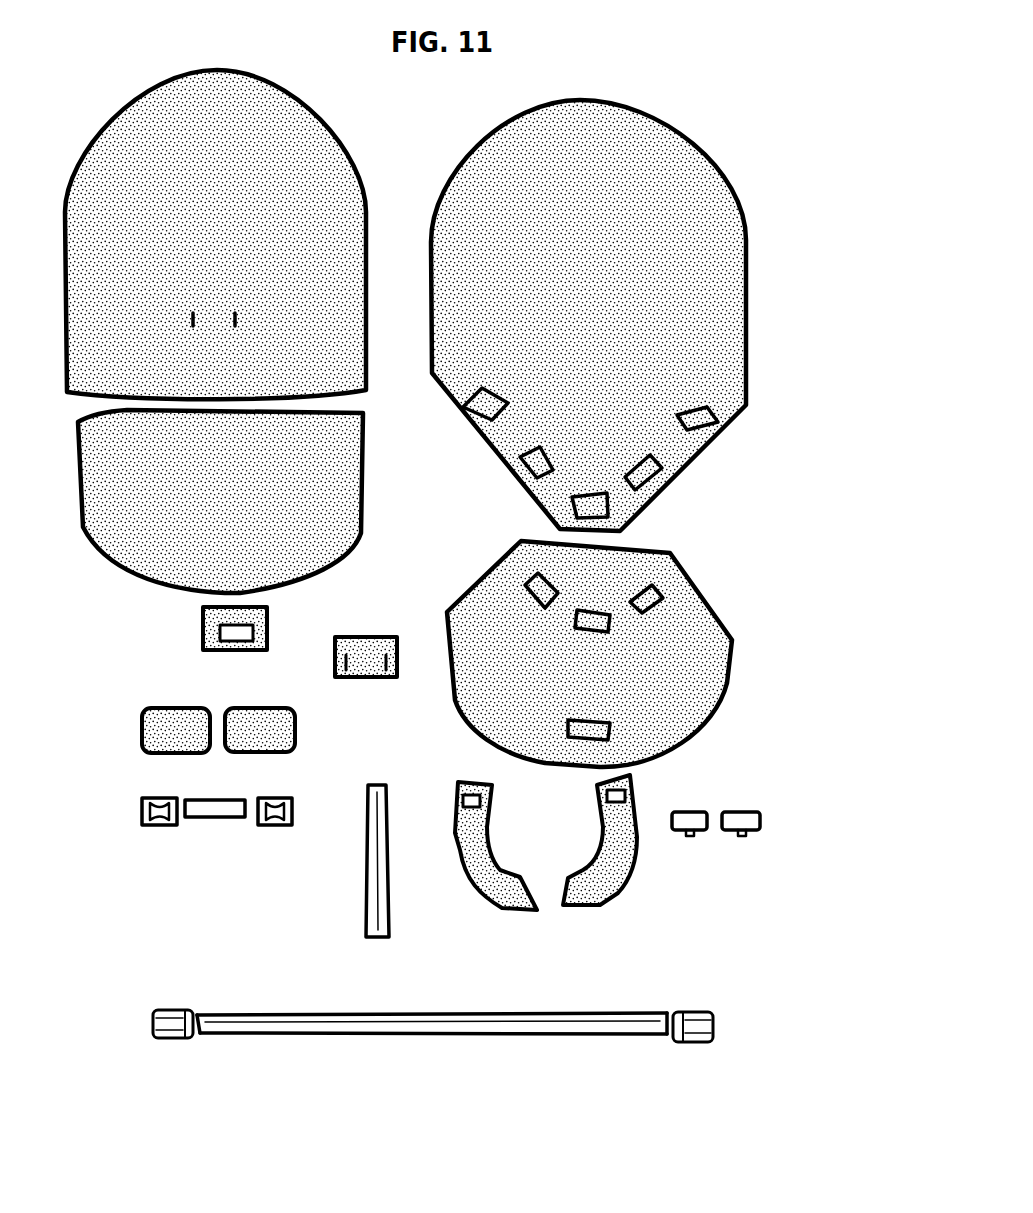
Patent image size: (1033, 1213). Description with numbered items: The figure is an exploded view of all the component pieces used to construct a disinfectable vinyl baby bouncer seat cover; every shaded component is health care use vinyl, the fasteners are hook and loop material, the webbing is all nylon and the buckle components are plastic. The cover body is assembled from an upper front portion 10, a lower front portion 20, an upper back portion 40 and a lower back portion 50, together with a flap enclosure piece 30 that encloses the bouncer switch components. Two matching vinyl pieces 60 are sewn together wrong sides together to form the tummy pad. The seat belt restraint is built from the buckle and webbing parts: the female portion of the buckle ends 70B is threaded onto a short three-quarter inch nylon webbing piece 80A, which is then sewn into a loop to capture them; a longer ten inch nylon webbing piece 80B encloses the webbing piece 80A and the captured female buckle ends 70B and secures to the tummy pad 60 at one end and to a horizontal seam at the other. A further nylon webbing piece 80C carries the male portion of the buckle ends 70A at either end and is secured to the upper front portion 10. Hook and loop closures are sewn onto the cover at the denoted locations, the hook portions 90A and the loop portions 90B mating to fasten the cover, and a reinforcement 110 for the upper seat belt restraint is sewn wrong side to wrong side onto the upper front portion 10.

The upper front portion 10 is at (308, 128).
The lower front portion 20 is at (333, 478).
The flap enclosure piece 30 is at (203, 623).
The upper back portion 40 is at (734, 268).
The lower back portion 50 is at (710, 670).
The tummy pad pieces 60 is at (185, 720).
The male portion of the buckle ends 70A is at (172, 1039).
The female portion of the buckle ends 70B is at (155, 825).
The nylon webbing piece 80A is at (216, 817).
The nylon webbing piece 80B is at (387, 893).
The nylon webbing piece 80C is at (405, 1015).
The hook portion of the closure attachment 90A is at (248, 633).
The loop portion of the closure attachment 90B is at (466, 405).
The reinforcement for upper portion seat belt restraint 110 is at (366, 650).